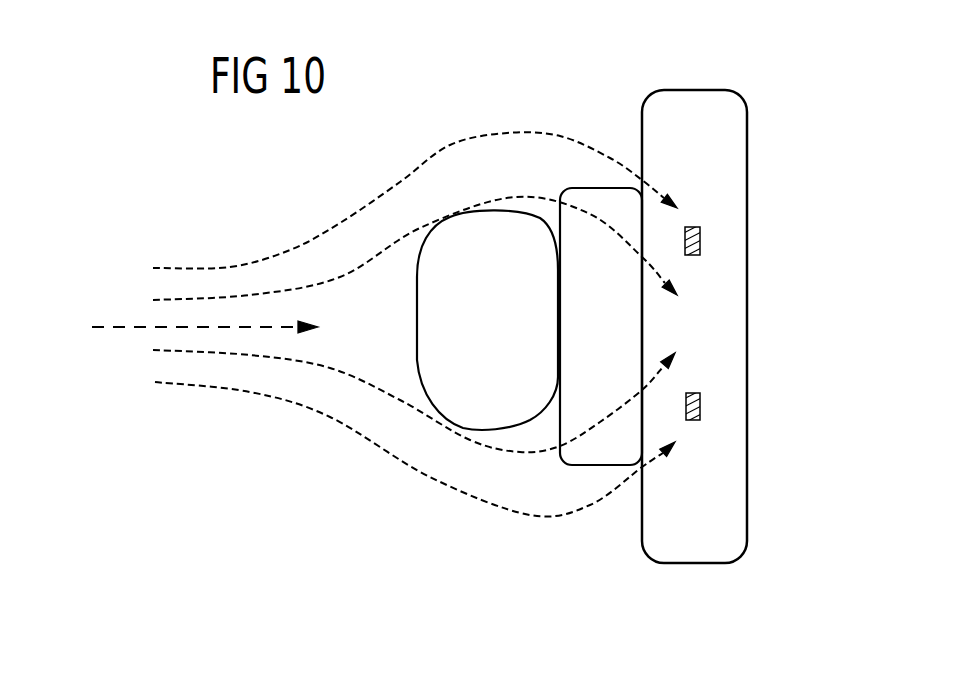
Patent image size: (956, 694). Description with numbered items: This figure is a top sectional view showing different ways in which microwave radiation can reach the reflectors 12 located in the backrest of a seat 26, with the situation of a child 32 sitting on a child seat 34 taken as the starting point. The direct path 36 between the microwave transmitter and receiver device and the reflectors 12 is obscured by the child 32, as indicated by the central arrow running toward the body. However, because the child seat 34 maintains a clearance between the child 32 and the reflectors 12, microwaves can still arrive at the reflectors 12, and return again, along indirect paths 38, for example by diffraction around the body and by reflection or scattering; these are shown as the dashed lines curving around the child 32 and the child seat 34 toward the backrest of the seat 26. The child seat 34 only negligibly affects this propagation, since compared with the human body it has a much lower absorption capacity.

The reflectors 12 is at (700, 241).
The seat 26 is at (733, 513).
The child 32 is at (425, 347).
The child seat 34 is at (571, 456).
The direct path 36 is at (122, 326).
The indirect paths 38 is at (243, 392).